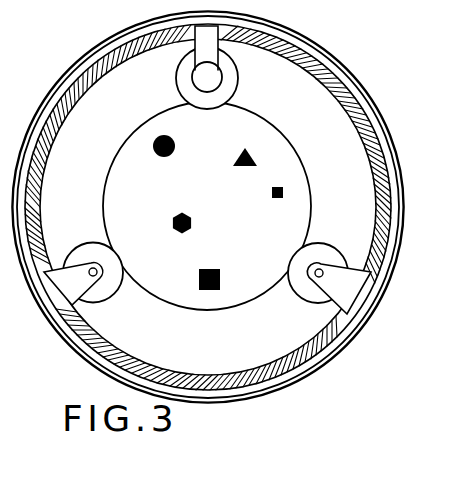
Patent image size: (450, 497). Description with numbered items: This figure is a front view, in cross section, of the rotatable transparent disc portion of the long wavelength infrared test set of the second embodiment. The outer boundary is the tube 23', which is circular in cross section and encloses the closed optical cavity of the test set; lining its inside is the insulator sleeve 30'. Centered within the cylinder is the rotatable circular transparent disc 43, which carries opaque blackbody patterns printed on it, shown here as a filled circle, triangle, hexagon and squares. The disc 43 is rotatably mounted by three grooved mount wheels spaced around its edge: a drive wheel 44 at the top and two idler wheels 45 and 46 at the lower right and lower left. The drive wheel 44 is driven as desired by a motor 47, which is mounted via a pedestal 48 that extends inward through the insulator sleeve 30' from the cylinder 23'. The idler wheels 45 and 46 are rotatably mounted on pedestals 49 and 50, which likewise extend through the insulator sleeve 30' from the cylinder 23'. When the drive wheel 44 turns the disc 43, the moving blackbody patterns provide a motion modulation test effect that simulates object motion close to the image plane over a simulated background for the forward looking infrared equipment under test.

The tube 23' is at (207, 206).
The insulator sleeve 30' is at (220, 207).
The rotatable circular transparent disc 43 is at (308, 208).
The drive wheel 44 is at (228, 76).
The idler wheel 45 is at (312, 242).
The idler wheel 46 is at (112, 291).
The motor 47 is at (212, 84).
The pedestal 48 is at (216, 50).
The pedestal 49 is at (356, 276).
The pedestal 50 is at (72, 304).